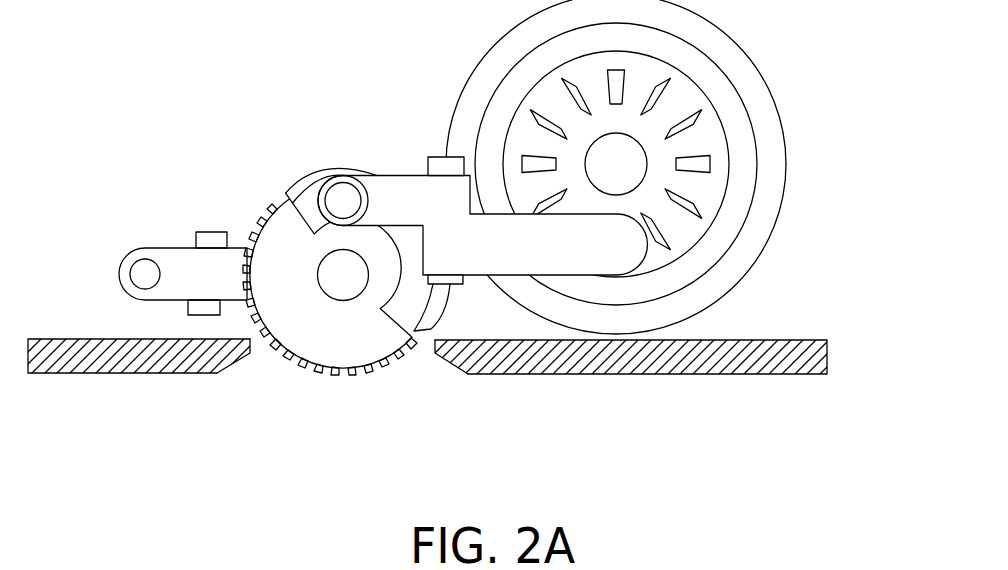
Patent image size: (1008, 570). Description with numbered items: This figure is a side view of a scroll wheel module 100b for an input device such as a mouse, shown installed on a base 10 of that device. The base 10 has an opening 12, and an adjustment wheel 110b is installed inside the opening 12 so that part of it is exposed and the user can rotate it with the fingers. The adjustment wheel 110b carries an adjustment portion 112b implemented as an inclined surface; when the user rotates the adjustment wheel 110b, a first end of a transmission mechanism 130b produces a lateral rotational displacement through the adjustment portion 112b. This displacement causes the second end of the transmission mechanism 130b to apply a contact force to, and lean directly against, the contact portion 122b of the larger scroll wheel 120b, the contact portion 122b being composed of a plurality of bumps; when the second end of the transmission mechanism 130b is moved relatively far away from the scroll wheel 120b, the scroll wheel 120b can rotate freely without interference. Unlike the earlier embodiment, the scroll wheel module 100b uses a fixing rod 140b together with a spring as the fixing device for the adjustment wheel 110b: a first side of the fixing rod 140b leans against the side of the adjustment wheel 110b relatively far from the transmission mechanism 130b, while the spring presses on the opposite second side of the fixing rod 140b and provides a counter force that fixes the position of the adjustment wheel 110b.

The base 10 is at (98, 353).
The opening 12 is at (252, 369).
The scroll wheel module 100b is at (878, 509).
The adjustment wheel 110b is at (327, 348).
The adjustment portion 112b is at (418, 298).
The scroll wheel 120b is at (732, 267).
The contact portion 122b is at (698, 165).
The transmission mechanism 130b is at (467, 250).
The fixing rod 140b is at (182, 280).